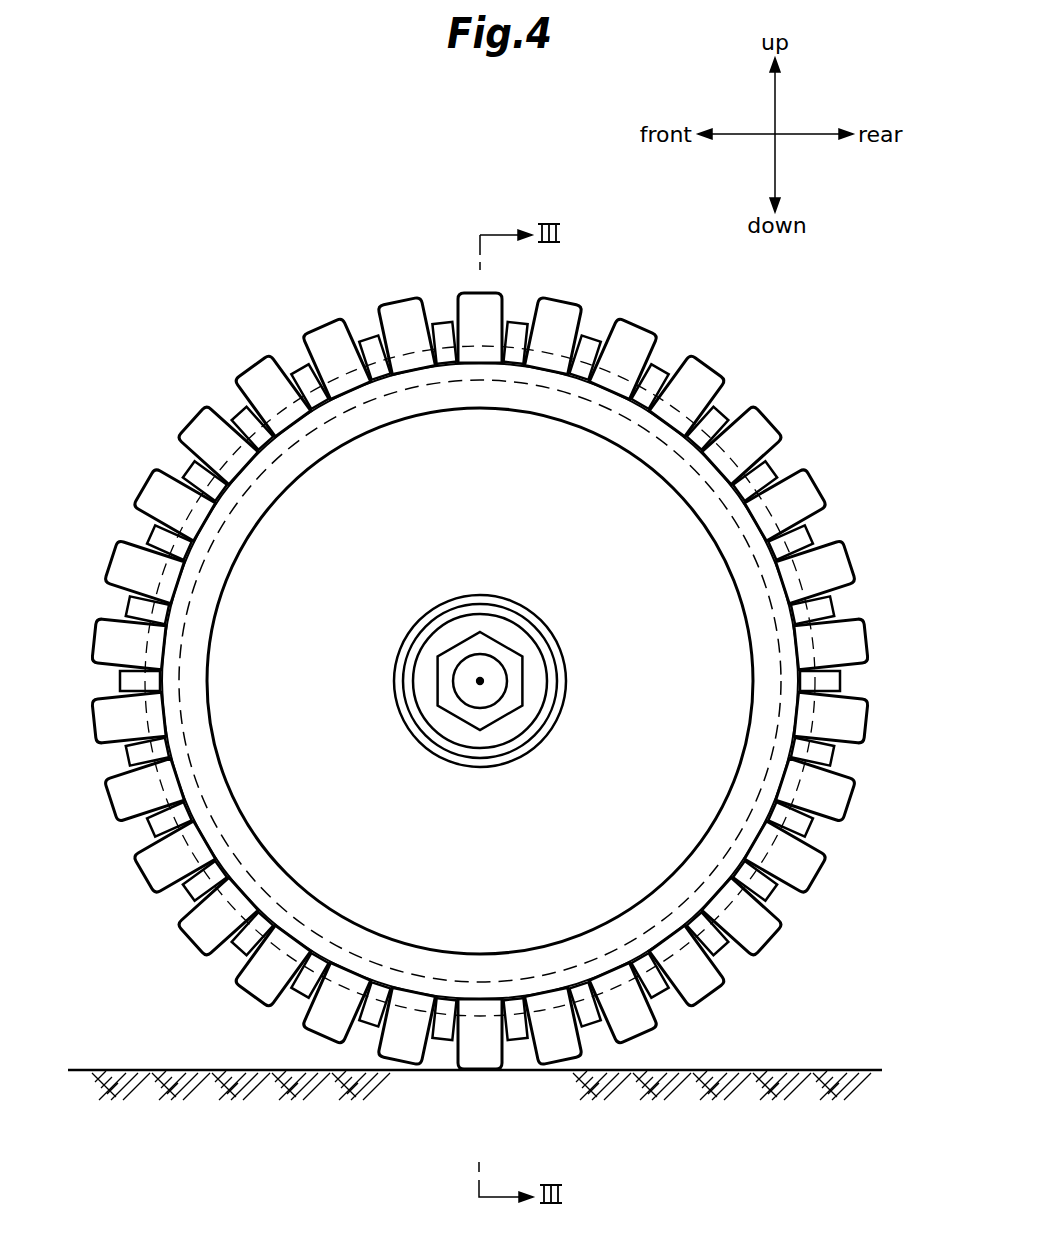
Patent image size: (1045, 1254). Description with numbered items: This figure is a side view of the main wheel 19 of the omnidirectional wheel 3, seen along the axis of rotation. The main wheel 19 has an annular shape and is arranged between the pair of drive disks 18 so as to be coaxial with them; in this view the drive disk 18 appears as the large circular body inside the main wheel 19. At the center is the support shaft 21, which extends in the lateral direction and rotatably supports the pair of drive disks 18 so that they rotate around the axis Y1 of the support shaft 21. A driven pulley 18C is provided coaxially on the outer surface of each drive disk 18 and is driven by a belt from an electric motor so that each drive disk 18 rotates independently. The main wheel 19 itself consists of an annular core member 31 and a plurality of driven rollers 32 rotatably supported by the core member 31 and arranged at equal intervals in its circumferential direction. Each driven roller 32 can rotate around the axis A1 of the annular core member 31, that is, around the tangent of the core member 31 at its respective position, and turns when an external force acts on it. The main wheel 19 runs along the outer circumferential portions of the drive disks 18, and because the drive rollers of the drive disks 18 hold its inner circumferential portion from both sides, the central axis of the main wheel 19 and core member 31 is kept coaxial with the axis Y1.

The omnidirectional wheel 3 is at (203, 265).
The drive disk 18 is at (310, 629).
The driven pulley 18C is at (190, 647).
The main wheel 19 is at (310, 328).
The support shaft 21 is at (467, 670).
The core member 31 is at (617, 372).
The driven roller 32 is at (845, 565).
The axis of the annular core member A1 is at (790, 490).
The axis of the support shaft Y1 is at (481, 683).